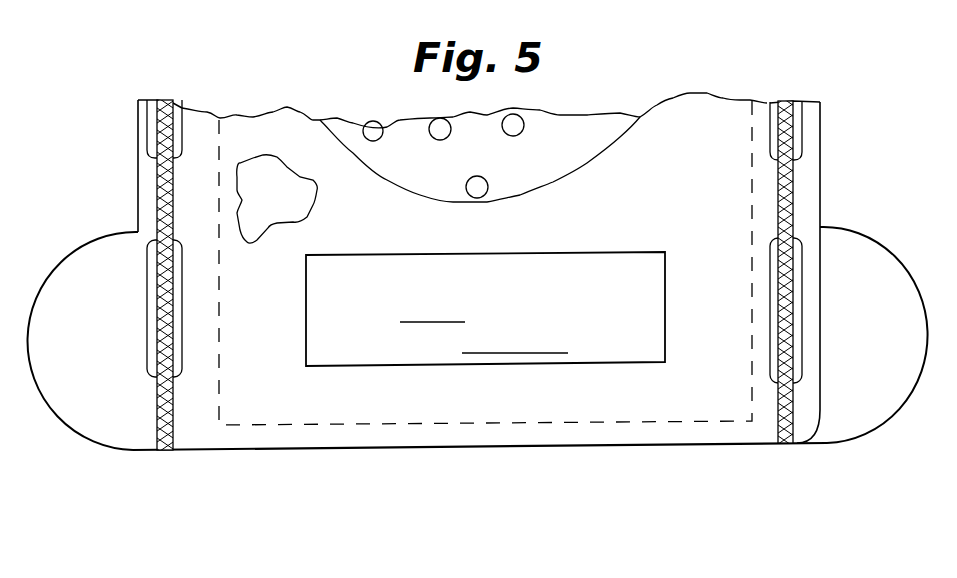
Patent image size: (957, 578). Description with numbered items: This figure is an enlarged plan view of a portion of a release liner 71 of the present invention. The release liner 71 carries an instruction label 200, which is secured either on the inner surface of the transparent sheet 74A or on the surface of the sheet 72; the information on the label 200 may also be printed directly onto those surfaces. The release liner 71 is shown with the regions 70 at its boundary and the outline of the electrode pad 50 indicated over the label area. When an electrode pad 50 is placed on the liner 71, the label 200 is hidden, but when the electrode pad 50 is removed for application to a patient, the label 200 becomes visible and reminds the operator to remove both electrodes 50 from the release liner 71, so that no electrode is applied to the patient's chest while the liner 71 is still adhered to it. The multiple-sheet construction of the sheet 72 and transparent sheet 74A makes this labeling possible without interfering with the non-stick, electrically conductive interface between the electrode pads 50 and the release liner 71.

The electrode pad 50 is at (305, 434).
The release liner 70 is at (618, 462).
The release liner 71 is at (702, 450).
The sheet 72 is at (291, 207).
The transparent sheet 74A is at (740, 316).
The instruction label 200 is at (597, 370).